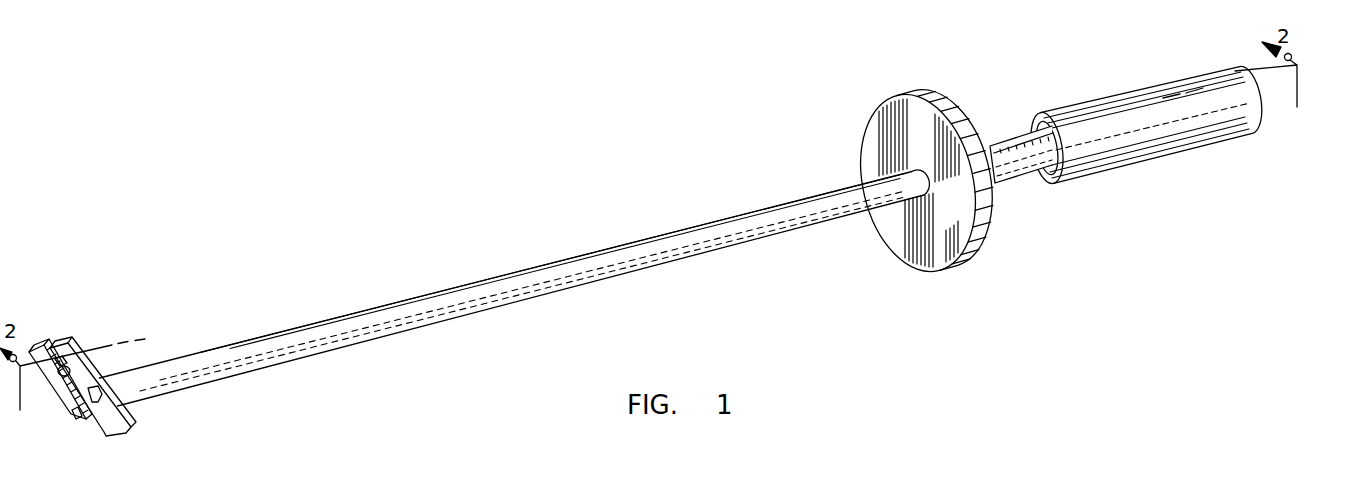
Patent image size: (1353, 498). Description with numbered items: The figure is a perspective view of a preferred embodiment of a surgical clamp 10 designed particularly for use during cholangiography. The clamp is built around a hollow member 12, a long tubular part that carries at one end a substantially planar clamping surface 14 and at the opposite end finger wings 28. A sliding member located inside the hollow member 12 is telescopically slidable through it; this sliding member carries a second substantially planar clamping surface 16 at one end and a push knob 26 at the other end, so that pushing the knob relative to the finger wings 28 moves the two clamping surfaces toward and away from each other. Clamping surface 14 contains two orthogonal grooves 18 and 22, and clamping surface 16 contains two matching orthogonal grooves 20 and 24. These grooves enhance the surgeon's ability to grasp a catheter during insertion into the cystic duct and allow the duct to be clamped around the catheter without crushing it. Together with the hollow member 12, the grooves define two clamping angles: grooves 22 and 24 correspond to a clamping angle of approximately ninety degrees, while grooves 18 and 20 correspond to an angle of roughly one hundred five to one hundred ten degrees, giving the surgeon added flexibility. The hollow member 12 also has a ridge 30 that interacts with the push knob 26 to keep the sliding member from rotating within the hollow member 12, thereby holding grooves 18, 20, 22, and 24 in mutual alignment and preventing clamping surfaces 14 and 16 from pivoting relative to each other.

The surgical clamp 10 is at (544, 240).
The hollow member 12 is at (517, 288).
The clamping surface 14 is at (120, 430).
The clamping surface 16 is at (103, 437).
The groove 18 is at (150, 340).
The groove 20 is at (62, 370).
The groove 22 is at (98, 390).
The groove 24 is at (72, 412).
The push knob 26 is at (1178, 132).
The finger wings 28 is at (983, 208).
The ridge 30 is at (1017, 130).